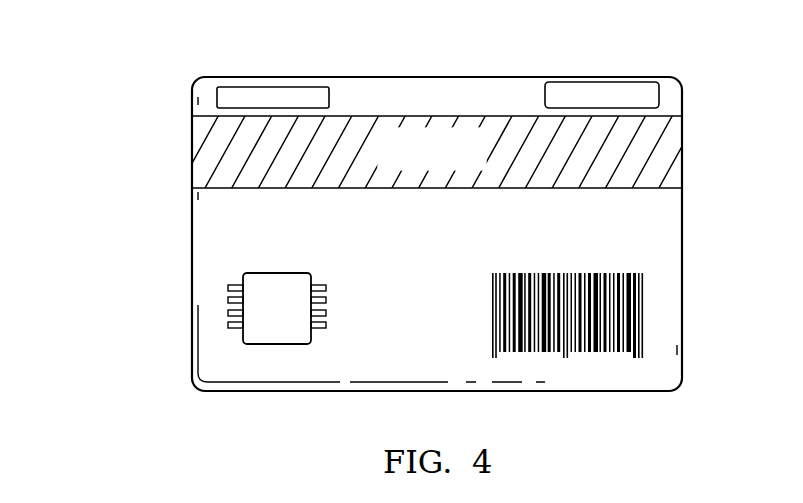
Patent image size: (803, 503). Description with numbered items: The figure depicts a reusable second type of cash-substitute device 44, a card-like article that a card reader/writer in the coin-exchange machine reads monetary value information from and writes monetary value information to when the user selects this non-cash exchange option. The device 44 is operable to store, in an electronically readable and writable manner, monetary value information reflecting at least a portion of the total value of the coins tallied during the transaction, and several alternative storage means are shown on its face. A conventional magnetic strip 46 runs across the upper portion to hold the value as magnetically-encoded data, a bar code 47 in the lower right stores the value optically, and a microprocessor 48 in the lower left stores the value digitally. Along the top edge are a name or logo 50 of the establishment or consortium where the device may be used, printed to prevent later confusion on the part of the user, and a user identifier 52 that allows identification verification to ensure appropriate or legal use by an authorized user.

The reusable second type of cash-substitute device 44 is at (86, 100).
The magnetic strip 46 is at (478, 151).
The bar code 47 is at (623, 324).
The microprocessor 48 is at (284, 328).
The name or logo 50 is at (588, 93).
The user identifier 52 is at (278, 97).